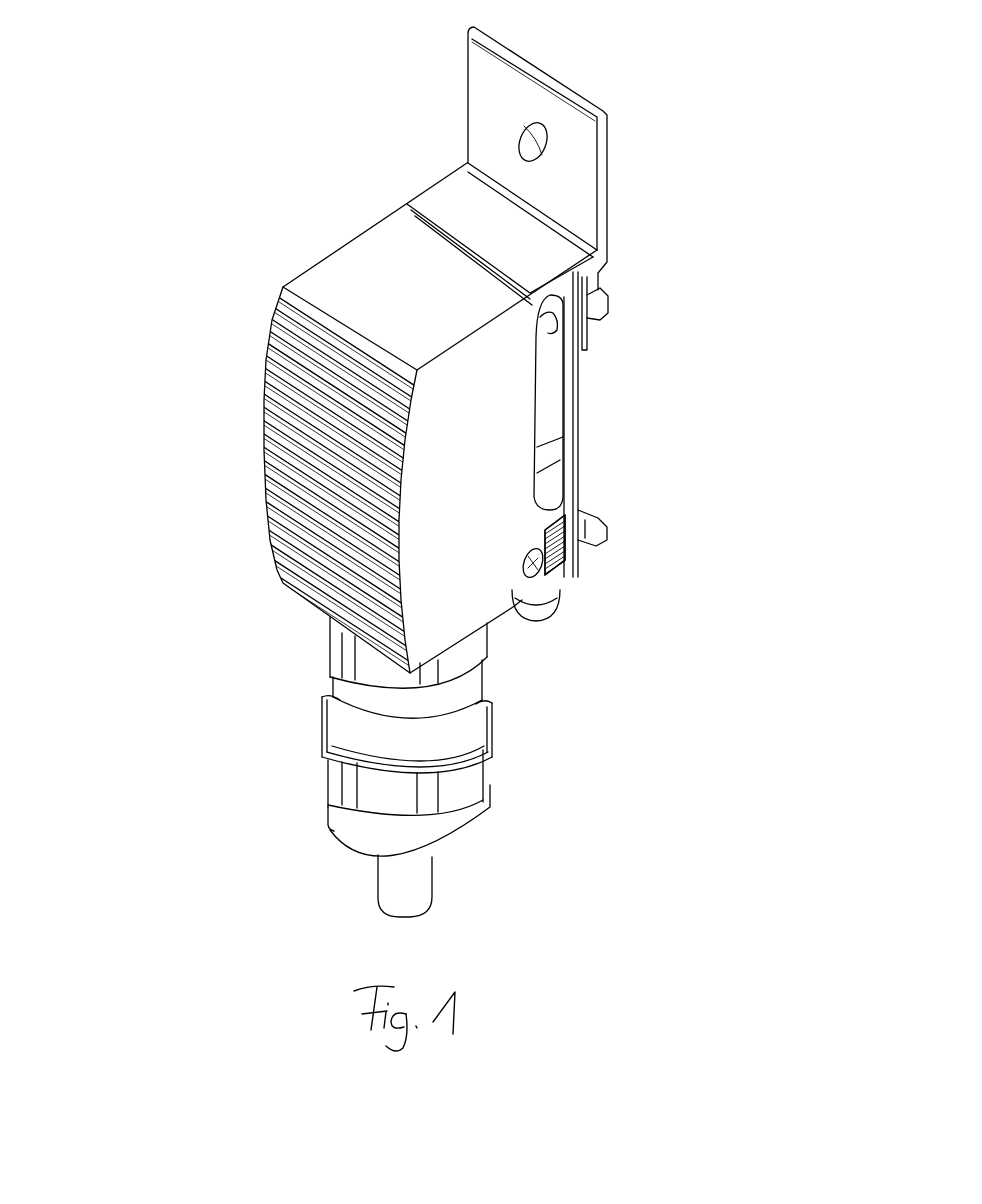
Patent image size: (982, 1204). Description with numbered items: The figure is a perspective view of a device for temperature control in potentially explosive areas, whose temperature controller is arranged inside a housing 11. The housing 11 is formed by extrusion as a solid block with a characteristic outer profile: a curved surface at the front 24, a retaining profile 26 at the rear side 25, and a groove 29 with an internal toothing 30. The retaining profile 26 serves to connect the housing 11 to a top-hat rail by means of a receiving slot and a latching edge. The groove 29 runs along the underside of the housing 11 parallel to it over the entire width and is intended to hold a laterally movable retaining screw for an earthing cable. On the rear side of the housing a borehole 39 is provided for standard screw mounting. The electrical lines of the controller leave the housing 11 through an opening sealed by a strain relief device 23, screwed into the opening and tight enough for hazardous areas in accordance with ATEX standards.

The housing 11 is at (265, 388).
The strain relief device 23 is at (322, 735).
The front 24 is at (312, 480).
The rear side 25 is at (578, 413).
The retaining profile 26 is at (652, 292).
The groove 29 is at (563, 550).
The internal toothing 30 is at (555, 545).
The borehole 39 is at (533, 133).